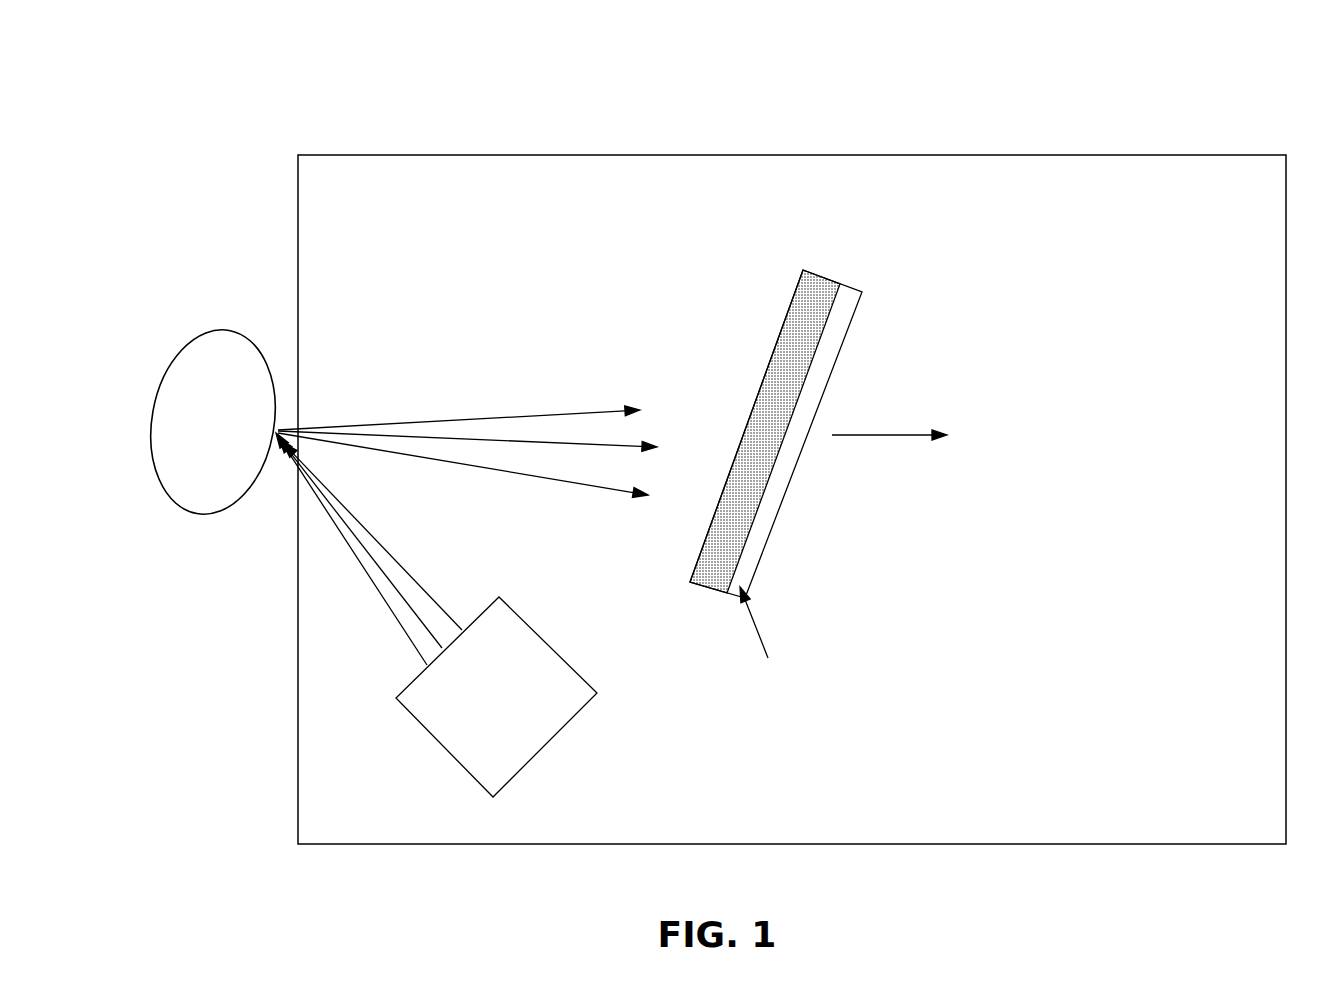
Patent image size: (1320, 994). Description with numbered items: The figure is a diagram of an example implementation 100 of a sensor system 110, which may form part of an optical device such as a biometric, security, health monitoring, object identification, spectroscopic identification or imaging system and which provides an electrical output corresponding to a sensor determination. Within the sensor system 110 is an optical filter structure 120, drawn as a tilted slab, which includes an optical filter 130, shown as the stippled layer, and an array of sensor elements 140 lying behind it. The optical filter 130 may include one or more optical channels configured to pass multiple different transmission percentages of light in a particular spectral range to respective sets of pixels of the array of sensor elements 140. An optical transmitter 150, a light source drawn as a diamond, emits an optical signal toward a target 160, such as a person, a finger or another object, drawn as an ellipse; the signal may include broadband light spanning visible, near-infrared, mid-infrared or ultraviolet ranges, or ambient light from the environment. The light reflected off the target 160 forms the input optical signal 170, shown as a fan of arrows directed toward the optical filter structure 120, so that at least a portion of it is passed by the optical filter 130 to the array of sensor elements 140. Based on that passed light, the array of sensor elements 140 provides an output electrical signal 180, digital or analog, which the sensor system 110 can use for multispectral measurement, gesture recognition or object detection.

The example implementation 100 is at (208, 48).
The sensor system 110 is at (798, 153).
The optical filter structure 120 is at (775, 461).
The optical filter 130 is at (708, 592).
The array of sensor elements 140 is at (788, 687).
The optical transmitter 150 is at (516, 706).
The target 160 is at (233, 433).
The optical signal directed toward the optical filter structure 170 is at (543, 371).
The output electrical signal 180 is at (998, 405).